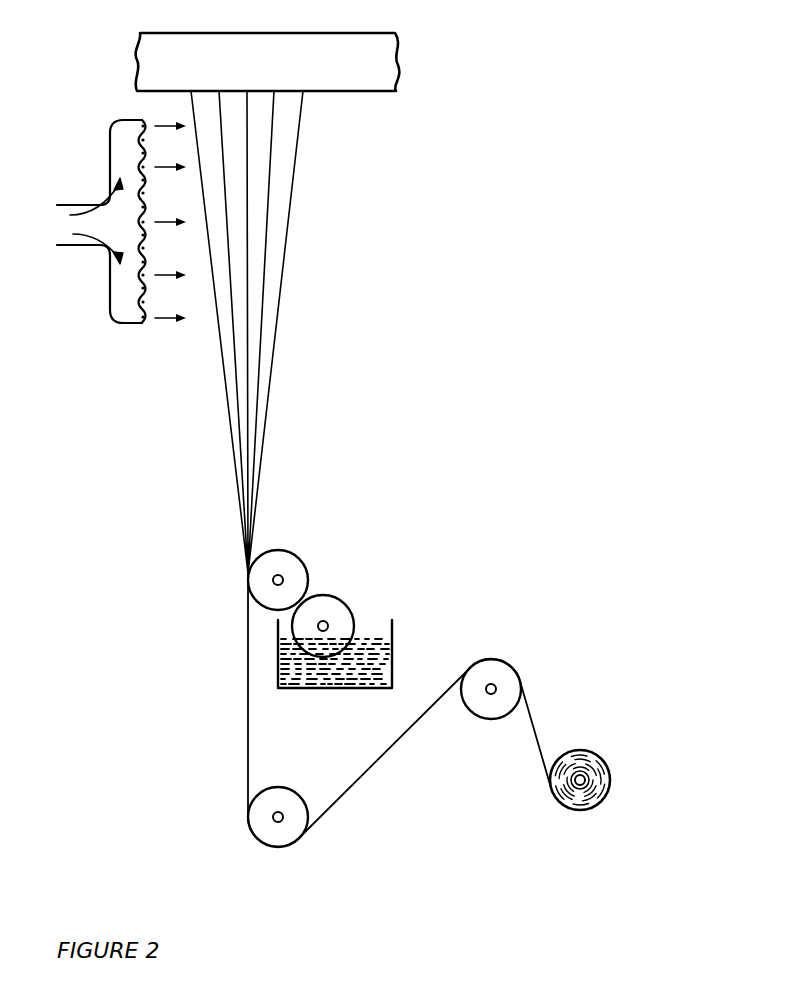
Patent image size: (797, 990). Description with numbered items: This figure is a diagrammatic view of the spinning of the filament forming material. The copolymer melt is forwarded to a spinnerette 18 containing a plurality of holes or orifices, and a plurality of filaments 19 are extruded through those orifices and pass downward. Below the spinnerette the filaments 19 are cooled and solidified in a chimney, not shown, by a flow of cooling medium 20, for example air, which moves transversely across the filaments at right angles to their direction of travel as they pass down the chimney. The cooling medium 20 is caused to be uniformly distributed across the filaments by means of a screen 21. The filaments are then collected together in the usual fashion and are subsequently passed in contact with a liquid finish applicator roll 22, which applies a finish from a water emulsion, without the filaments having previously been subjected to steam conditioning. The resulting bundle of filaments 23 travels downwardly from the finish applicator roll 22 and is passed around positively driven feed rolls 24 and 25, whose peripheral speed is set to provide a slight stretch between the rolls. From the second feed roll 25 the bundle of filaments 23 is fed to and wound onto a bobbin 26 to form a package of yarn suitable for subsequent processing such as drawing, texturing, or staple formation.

The spinnerette 18 is at (397, 72).
The filaments 19 is at (288, 232).
The cooling medium 20 is at (82, 221).
The screen 21 is at (138, 290).
The liquid finish applicator roll 22 is at (283, 551).
The bundle of filaments 23 is at (247, 705).
The feed roll 24 is at (252, 832).
The feed roll 25 is at (503, 661).
The bobbin 26 is at (560, 804).